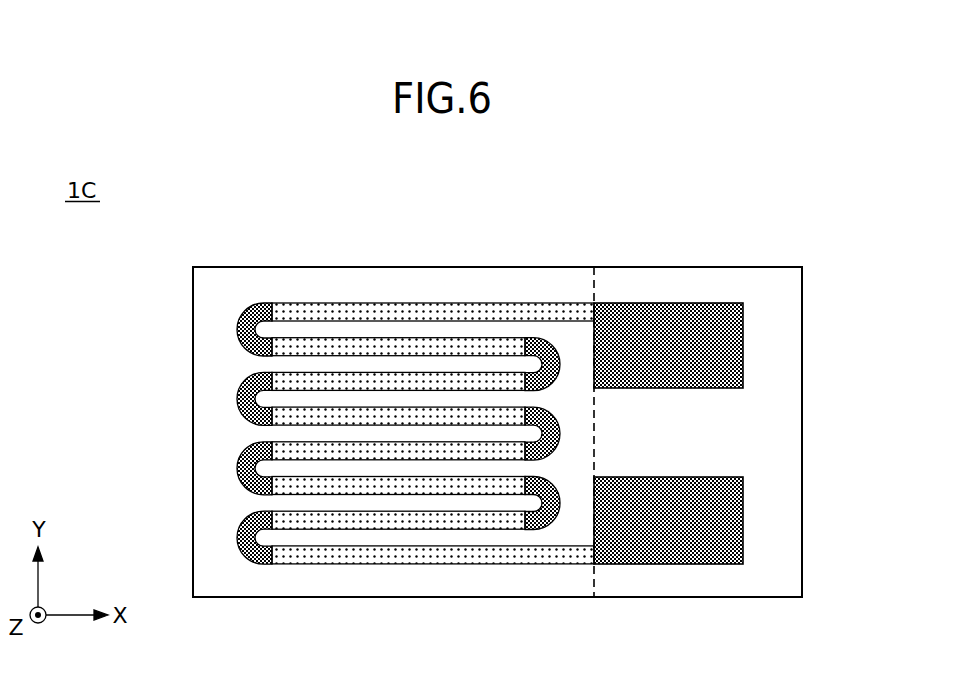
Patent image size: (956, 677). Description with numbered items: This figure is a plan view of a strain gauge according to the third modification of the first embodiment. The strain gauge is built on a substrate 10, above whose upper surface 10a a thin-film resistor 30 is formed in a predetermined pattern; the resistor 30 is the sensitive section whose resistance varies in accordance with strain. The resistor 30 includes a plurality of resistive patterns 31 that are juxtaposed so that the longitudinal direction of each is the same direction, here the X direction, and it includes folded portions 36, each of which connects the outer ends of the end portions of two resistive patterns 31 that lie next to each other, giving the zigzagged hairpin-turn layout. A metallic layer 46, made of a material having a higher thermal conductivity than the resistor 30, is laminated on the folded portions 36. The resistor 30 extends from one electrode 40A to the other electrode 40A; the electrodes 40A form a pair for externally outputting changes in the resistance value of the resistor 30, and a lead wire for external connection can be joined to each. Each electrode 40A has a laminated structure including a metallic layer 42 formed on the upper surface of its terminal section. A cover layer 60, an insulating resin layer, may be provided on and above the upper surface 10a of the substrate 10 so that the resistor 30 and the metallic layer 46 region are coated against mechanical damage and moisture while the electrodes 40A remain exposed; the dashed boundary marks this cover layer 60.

The substrate 10 is at (218, 254).
The upper surface 10a is at (436, 287).
The resistor 30 is at (361, 368).
The resistive patterns 31 is at (336, 312).
The folded portions 36 is at (247, 300).
The metallic layer 46 is at (243, 393).
The cover layer 60 is at (596, 288).
The metallic layers 42 is at (670, 327).
The electrodes 40A is at (683, 387).